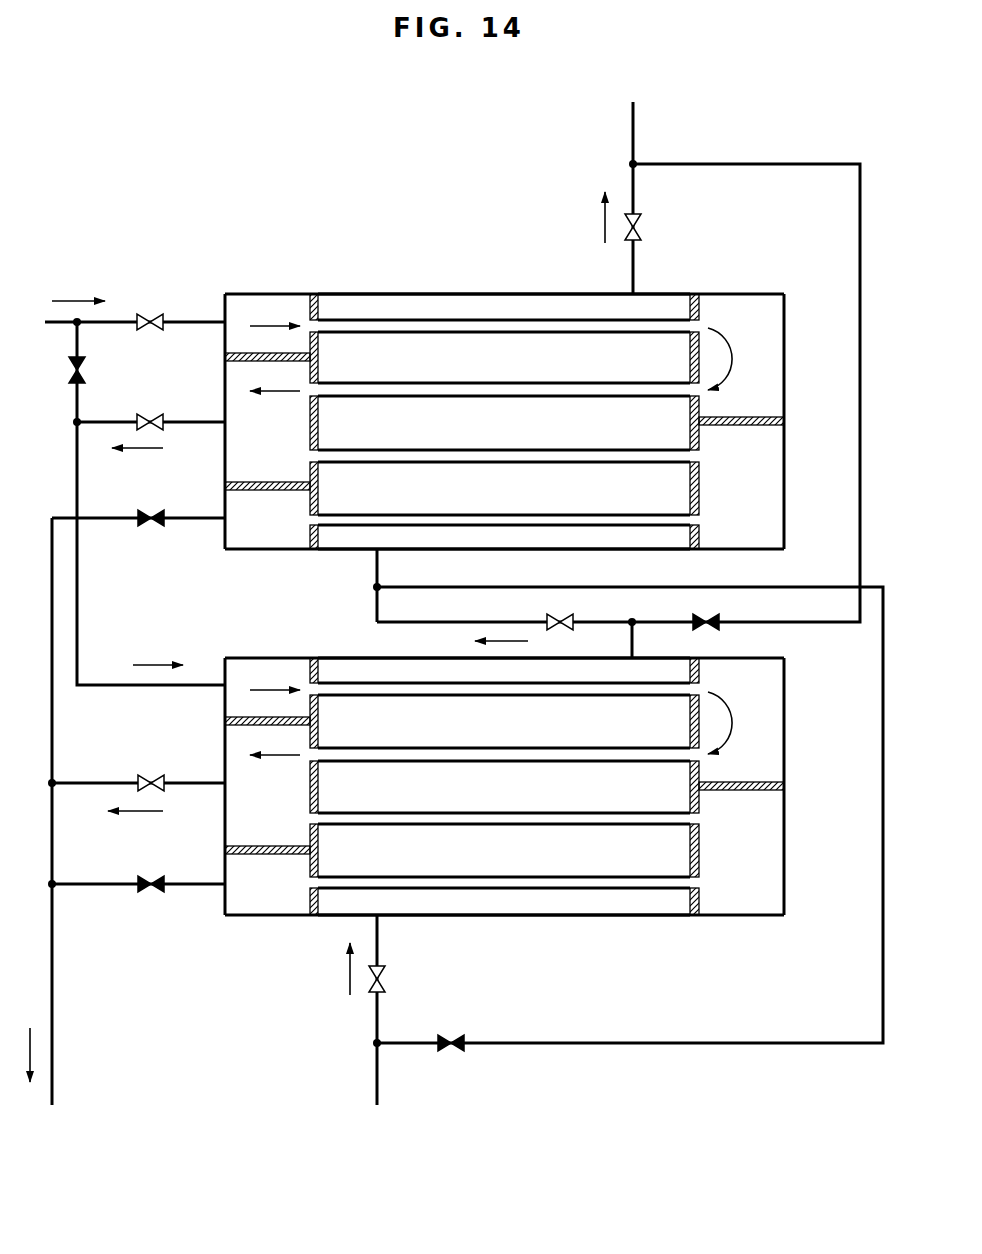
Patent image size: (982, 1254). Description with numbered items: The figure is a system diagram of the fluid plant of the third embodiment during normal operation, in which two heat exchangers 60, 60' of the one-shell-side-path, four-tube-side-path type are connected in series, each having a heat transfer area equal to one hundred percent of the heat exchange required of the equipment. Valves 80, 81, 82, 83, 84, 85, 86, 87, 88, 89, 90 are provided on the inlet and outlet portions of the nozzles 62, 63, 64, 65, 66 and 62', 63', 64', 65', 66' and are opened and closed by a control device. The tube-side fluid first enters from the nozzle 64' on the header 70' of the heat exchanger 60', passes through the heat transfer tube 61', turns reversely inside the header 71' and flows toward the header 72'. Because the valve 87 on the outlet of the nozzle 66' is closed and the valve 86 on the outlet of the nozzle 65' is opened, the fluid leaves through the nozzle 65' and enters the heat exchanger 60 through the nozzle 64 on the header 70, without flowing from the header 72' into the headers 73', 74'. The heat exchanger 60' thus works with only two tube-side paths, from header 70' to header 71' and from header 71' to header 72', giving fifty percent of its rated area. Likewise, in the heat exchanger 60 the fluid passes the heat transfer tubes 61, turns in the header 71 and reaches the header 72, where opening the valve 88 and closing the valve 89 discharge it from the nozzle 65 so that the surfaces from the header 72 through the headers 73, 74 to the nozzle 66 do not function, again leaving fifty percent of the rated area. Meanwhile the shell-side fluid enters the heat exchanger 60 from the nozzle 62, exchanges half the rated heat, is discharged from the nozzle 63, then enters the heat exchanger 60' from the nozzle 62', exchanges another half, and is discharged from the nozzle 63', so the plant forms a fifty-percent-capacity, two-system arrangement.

The heat exchanger 60 is at (504, 821).
The heat exchanger 60' is at (504, 390).
The heat transfer tube 61 is at (504, 930).
The heat transfer tube 61' is at (504, 281).
The nozzle 62 is at (410, 1010).
The nozzle 62' is at (343, 585).
The nozzle 63 is at (663, 642).
The nozzle 63' is at (669, 198).
The nozzle 64 is at (149, 532).
The nozzle 64' is at (135, 299).
The nozzle 65 is at (138, 759).
The nozzle 65' is at (151, 396).
The nozzle 66 is at (138, 910).
The nozzle 66' is at (138, 543).
The header 70 is at (267, 667).
The header 70' is at (267, 298).
The header 71 is at (772, 724).
The header 71' is at (773, 359).
The header 72 is at (238, 791).
The header 72' is at (240, 425).
The header 73 is at (808, 852).
The header 73' is at (810, 487).
The header 74 is at (250, 915).
The header 74' is at (253, 548).
The valve 80 is at (386, 980).
The valve 81 is at (464, 1050).
The valve 82 is at (547, 618).
The valve 83 is at (722, 620).
The valve 84 is at (644, 226).
The valve 85 is at (151, 314).
The valve 86 is at (151, 413).
The valve 87 is at (151, 527).
The valve 88 is at (151, 776).
The valve 89 is at (153, 893).
The valve 90 is at (85, 372).